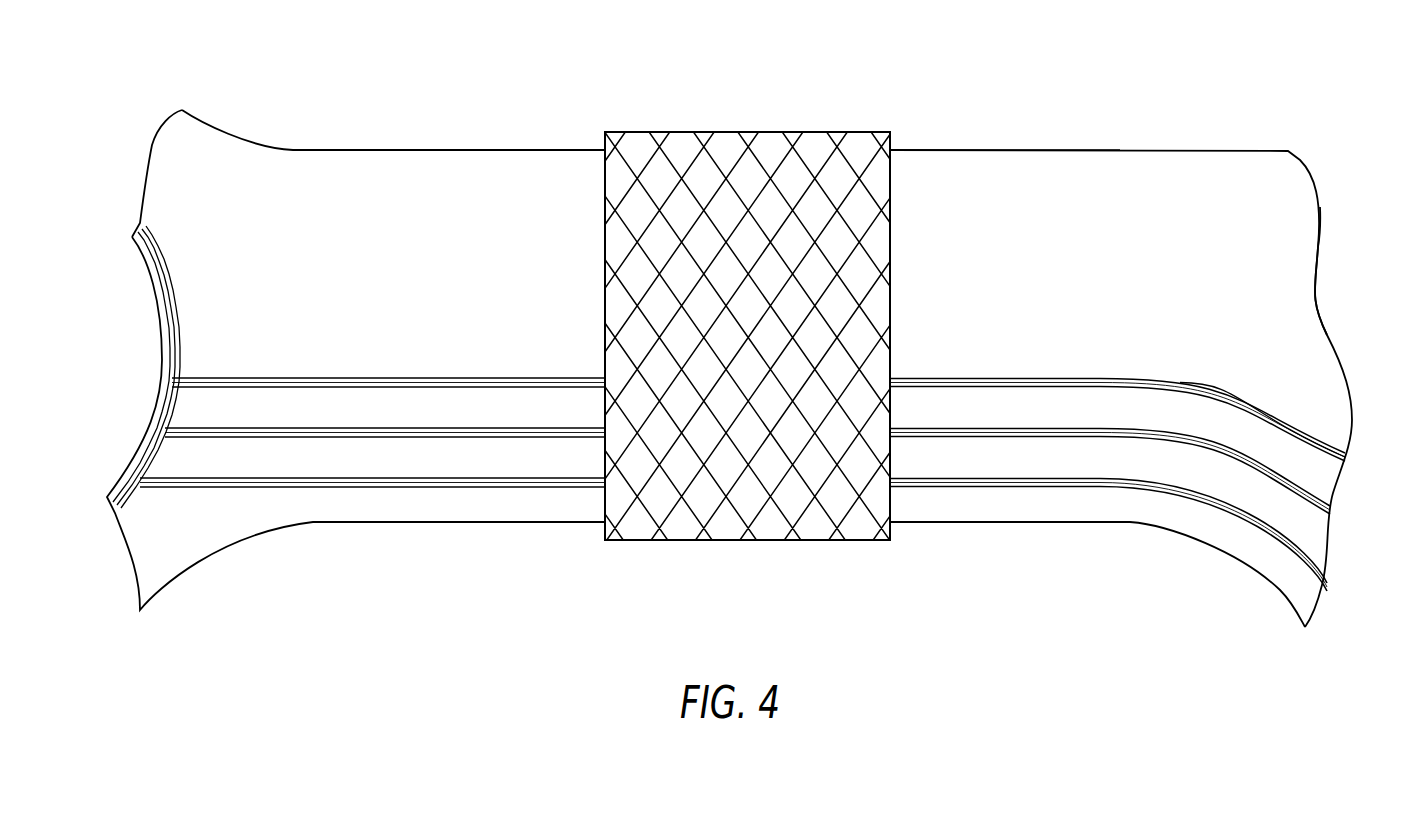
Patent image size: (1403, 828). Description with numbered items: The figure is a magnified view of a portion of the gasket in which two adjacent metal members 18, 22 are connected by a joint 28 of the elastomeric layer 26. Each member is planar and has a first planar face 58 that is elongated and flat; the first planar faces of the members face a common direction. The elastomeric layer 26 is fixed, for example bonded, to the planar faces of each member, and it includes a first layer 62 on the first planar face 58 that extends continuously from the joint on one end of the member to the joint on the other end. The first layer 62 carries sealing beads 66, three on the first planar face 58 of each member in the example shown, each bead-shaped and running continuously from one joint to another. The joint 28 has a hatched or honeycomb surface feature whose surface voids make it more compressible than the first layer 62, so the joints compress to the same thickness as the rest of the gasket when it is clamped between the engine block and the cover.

The member 18 is at (1275, 185).
The member 22 is at (393, 168).
The elastomeric layer 26 is at (948, 352).
The joint 28 is at (820, 130).
The first planar face 58 is at (1280, 272).
The first layer 62 is at (1292, 403).
The sealing bead 66 is at (280, 477).